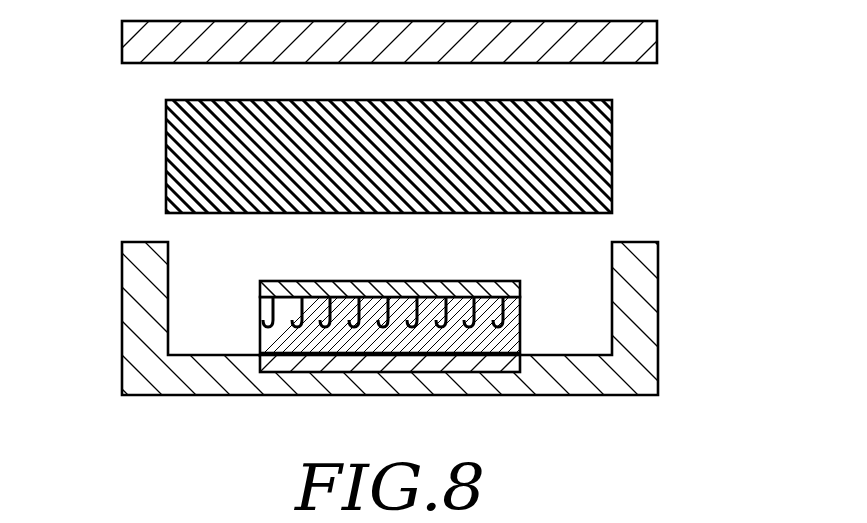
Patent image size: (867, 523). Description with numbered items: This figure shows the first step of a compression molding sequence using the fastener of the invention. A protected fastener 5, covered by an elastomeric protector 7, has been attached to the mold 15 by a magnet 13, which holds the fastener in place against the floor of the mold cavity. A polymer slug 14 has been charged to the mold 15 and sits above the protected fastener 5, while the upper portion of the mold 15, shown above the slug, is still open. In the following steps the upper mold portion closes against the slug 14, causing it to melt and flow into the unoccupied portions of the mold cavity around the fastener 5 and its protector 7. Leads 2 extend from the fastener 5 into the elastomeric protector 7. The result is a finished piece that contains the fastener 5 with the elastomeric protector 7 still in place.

The electronic component leads 2 is at (260, 310).
The protected fastener 5 is at (314, 276).
The elastomeric protector 7 is at (518, 340).
The magnet 13 is at (330, 367).
The polymer slug 14 is at (175, 153).
The mold 15 is at (642, 38).